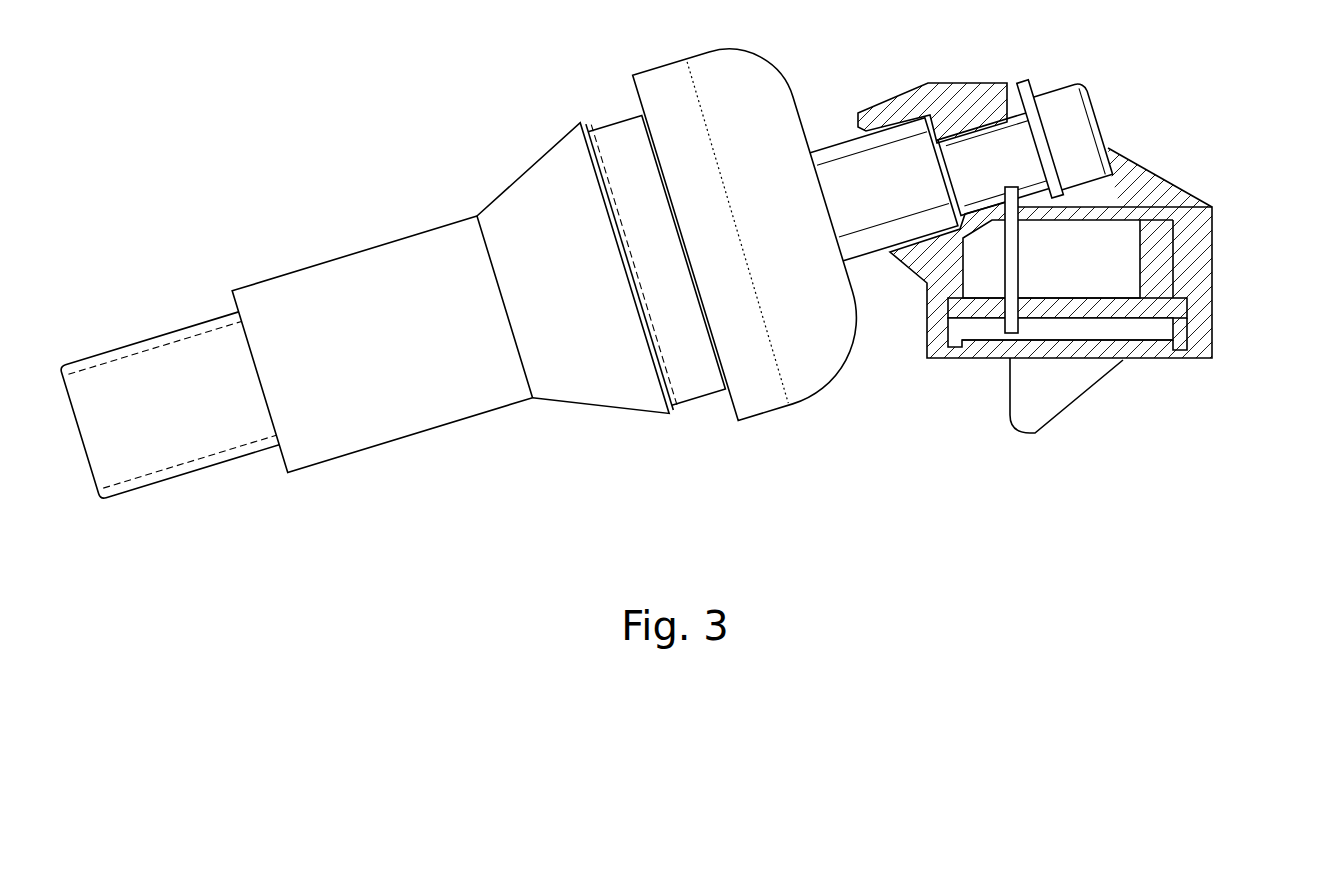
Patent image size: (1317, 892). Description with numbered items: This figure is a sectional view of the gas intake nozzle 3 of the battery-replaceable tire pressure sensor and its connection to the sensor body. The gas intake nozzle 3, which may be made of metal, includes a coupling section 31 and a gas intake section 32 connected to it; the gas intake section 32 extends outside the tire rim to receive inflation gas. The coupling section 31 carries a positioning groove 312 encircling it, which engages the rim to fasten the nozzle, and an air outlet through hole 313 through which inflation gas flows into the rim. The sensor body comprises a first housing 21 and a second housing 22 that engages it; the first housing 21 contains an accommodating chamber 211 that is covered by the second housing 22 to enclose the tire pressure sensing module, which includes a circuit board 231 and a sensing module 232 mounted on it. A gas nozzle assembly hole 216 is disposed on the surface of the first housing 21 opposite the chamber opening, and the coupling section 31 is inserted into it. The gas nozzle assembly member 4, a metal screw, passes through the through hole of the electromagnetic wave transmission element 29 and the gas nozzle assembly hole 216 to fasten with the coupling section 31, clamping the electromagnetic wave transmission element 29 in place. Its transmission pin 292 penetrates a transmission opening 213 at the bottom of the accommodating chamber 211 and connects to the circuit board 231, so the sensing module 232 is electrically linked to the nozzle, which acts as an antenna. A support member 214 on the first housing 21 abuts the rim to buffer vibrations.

The gas intake nozzle 3 is at (288, 262).
The gas intake section 32 is at (180, 450).
The positioning groove 312 is at (677, 367).
The air outlet through hole 313 is at (830, 140).
The coupling section 31 is at (873, 228).
The first housing 21 is at (1212, 345).
The accommodating chamber 211 is at (1143, 260).
The transmission opening 213 is at (1085, 222).
The sensing module 232 is at (1176, 255).
The circuit board 231 is at (1200, 320).
The second housing 22 is at (1143, 343).
The support member 214 is at (1048, 407).
The transmission pin 292 is at (1008, 363).
The gas nozzle assembly member 4 is at (1060, 105).
The electromagnetic wave transmission element 29 is at (1022, 82).
The gas nozzle assembly hole 216 is at (938, 88).